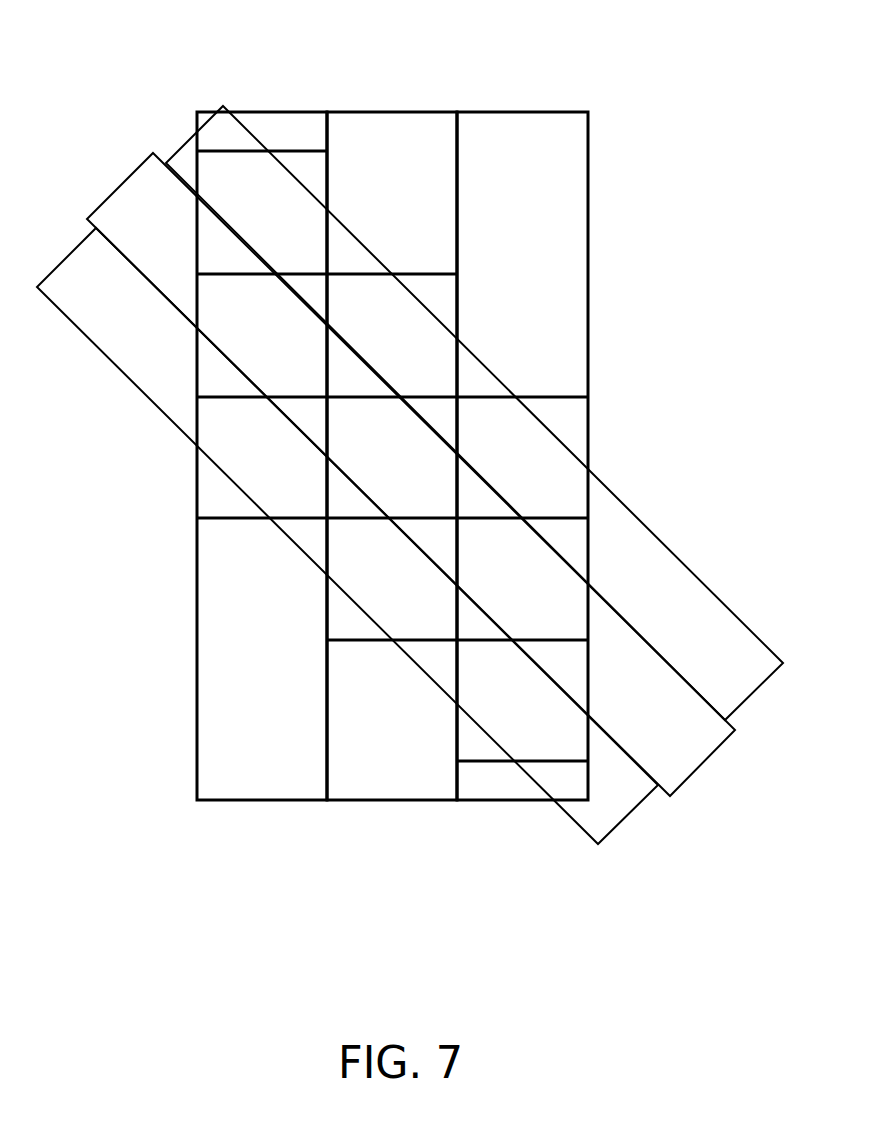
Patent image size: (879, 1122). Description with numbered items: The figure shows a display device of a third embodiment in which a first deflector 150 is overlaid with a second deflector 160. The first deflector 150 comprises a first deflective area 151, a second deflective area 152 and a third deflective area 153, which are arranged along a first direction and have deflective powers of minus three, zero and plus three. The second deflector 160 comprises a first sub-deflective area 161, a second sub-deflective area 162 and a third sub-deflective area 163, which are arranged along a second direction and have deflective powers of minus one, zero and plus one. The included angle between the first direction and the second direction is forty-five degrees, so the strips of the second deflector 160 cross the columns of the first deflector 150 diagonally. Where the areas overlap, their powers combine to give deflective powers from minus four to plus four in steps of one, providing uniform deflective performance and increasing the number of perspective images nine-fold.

The first deflector 150 is at (750, 5).
The first deflective area 151 is at (558, 132).
The second deflective area 152 is at (408, 784).
The third deflective area 153 is at (268, 785).
The second deflector 160 is at (750, 170).
The first sub-deflective area 161 is at (742, 690).
The second sub-deflective area 162 is at (695, 757).
The third sub-deflective area 163 is at (607, 813).